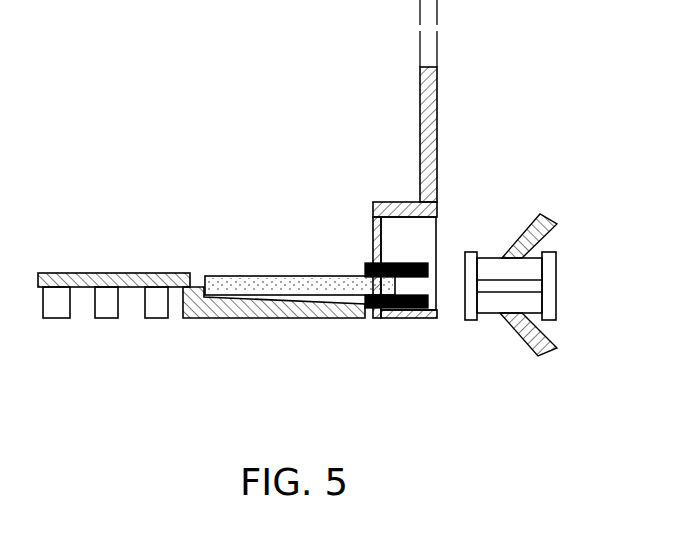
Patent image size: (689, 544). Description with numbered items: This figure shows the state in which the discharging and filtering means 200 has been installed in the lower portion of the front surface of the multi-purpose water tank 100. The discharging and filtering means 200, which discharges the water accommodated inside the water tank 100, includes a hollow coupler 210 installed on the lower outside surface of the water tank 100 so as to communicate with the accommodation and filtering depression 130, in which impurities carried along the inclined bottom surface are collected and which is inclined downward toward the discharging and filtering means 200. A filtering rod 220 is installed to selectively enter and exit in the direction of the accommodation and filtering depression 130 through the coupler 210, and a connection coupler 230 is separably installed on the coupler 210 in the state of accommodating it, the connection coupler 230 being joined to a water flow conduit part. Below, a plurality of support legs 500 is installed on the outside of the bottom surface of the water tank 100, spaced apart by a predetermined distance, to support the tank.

The water tank 100 is at (437, 95).
The accommodation and filtering depression 130 is at (340, 297).
The discharging and filtering means 200 is at (272, 198).
The coupler 210 is at (388, 267).
The filtering rod 220 is at (248, 278).
The connection coupler 230 is at (497, 263).
The support legs 500 is at (113, 320).